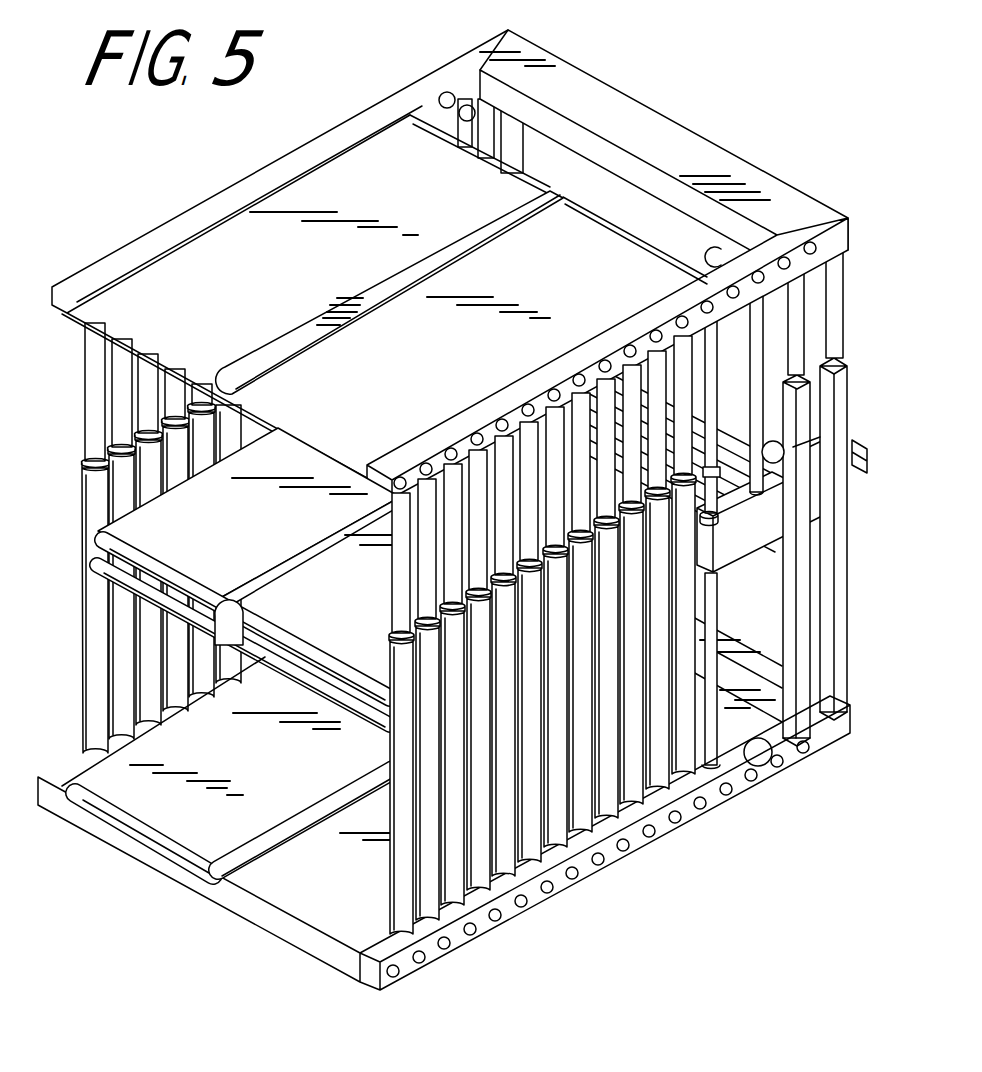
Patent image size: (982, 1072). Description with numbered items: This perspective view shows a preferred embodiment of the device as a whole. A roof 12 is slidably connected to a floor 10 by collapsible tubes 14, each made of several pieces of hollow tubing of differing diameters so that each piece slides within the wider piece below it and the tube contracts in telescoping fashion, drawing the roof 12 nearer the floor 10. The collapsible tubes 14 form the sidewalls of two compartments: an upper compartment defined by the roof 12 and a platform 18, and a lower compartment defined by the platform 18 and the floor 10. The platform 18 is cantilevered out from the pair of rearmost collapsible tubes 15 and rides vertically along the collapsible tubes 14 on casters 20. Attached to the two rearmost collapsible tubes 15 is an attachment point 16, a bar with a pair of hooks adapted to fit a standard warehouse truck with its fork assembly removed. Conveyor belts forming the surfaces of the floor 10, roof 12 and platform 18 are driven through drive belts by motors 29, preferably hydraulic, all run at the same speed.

The floor 10 is at (120, 777).
The roof 12 is at (310, 182).
The collapsible tubes 14 is at (95, 375).
The rearmost collapsible tubes 15 is at (517, 152).
The attachment point 16 is at (855, 442).
The platform 18 is at (97, 530).
The casters 20 is at (778, 450).
The motors 29 is at (450, 93).